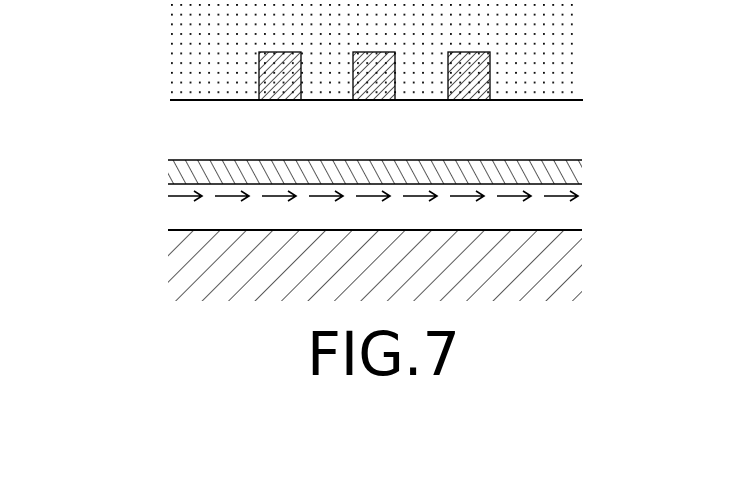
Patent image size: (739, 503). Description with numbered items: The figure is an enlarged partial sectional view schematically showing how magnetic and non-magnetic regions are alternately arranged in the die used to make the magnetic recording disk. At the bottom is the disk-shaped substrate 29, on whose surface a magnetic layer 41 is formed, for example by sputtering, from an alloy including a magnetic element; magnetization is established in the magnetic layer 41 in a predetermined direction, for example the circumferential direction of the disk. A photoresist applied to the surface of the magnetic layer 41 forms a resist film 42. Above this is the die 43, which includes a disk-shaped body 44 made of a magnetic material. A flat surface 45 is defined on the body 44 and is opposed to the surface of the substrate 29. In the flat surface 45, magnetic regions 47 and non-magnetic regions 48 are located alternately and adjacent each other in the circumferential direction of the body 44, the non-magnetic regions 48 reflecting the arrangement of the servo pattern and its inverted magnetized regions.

The substrate 29 is at (563, 230).
The magnetic layer 41 is at (557, 183).
The resist film 42 is at (182, 161).
The die 43 is at (170, 60).
The body 44 is at (183, 85).
The flat surface 45 is at (583, 101).
The magnetic regions 47 is at (216, 100).
The non-magnetic regions 48 is at (269, 100).